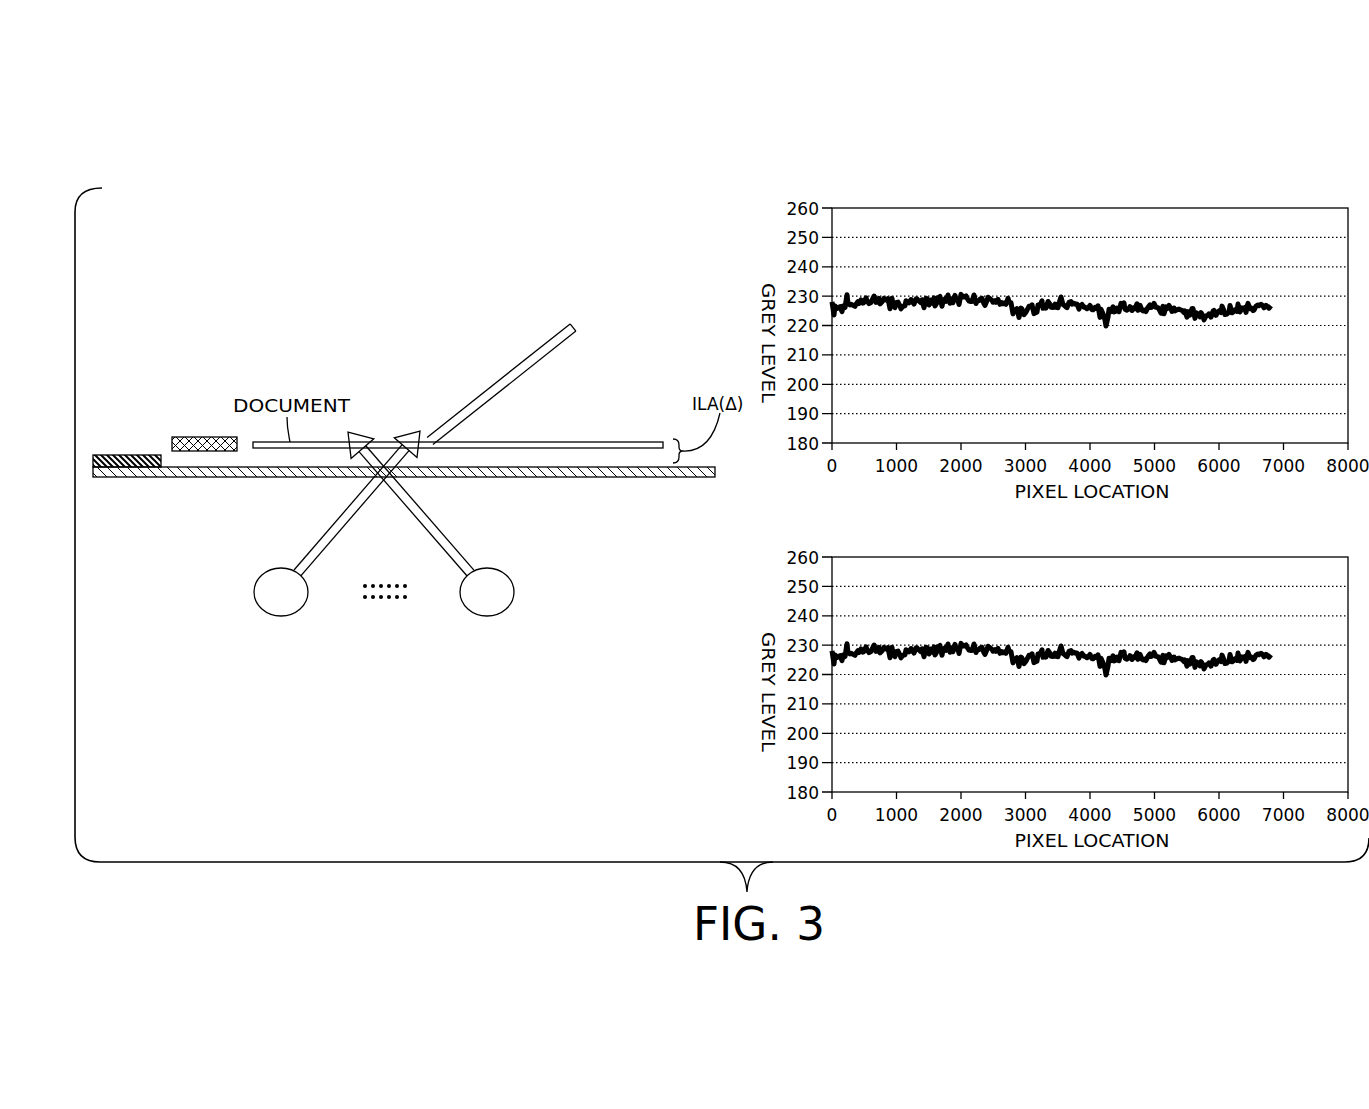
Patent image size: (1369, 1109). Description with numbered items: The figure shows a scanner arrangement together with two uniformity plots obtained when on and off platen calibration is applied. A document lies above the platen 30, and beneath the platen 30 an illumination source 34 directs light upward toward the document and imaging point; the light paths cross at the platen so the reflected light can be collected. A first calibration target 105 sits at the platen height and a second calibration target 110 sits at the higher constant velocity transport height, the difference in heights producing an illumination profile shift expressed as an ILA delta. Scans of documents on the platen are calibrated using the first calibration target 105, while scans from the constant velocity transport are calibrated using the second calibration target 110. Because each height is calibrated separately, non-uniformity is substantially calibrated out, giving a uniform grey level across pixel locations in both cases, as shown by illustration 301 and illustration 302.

The platen 30 is at (622, 477).
The illumination source 34 is at (255, 587).
The first calibration target 105 is at (128, 455).
The second calibration target 110 is at (205, 437).
The illustration 301 is at (836, 183).
The illustration 302 is at (836, 531).